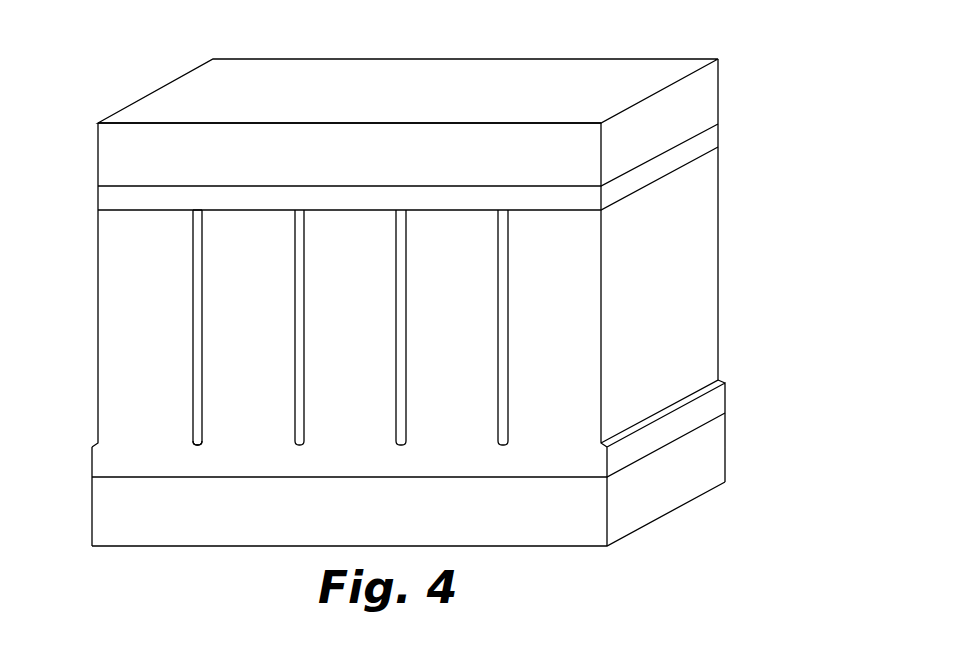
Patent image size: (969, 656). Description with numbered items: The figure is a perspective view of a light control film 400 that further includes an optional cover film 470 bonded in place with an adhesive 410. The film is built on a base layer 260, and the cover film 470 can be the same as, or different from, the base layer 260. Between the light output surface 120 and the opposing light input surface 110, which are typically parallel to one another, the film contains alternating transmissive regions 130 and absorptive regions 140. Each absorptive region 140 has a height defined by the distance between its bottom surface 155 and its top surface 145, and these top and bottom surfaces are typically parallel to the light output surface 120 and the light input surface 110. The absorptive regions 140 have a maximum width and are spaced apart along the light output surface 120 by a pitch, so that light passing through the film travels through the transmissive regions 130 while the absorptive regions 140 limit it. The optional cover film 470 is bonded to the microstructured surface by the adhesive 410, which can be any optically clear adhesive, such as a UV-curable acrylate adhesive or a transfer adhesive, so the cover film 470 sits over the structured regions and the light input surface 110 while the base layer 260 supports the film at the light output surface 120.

The light control film 400 is at (737, 41).
The light input surface 110 is at (203, 80).
The cover film 470 is at (377, 166).
The adhesive 410 is at (105, 200).
The transmissive regions 130 is at (130, 288).
The absorptive regions 140 is at (193, 333).
The top surface 145 is at (197, 210).
The bottom surface 155 is at (200, 447).
The base layer 260 is at (358, 524).
The light output surface 120 is at (667, 513).